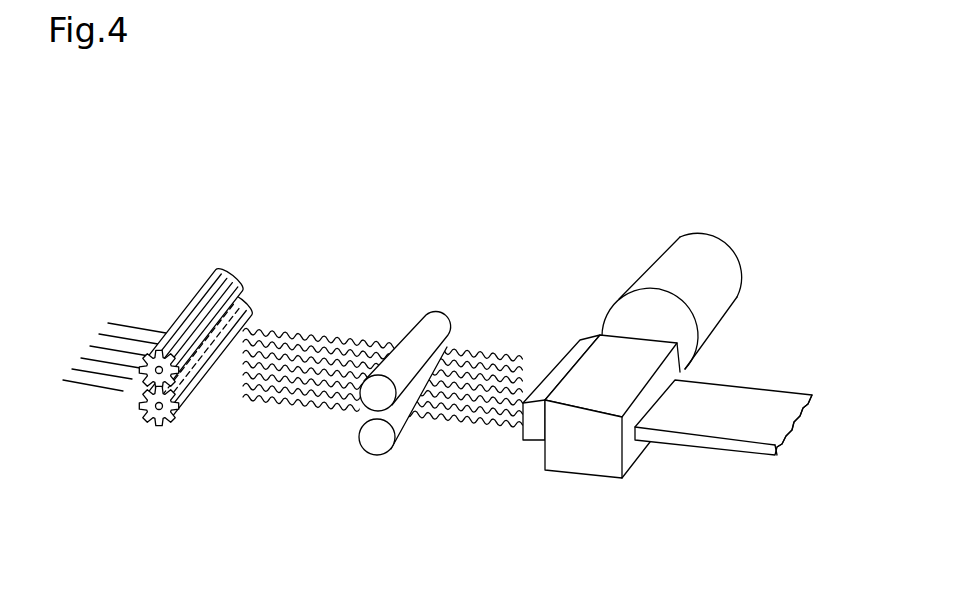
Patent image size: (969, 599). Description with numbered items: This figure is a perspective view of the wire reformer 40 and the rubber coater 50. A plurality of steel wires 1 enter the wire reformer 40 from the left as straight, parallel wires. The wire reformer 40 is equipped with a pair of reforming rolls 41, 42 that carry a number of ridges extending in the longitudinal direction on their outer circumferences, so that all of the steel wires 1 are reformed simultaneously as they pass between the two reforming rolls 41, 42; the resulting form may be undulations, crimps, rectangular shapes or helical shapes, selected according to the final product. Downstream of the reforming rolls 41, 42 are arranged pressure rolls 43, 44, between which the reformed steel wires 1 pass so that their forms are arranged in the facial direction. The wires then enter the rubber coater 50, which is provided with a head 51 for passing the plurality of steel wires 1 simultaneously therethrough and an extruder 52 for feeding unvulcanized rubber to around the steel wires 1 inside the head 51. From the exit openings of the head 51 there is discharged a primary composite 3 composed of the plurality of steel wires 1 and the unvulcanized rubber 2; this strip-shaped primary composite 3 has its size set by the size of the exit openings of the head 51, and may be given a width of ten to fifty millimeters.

The steel wires 1 is at (105, 385).
The unvulcanized rubber 2 is at (713, 392).
The primary composite 3 is at (786, 384).
The wire reformer 40 is at (236, 345).
The reforming roll 41 is at (203, 282).
The reforming roll 42 is at (185, 412).
The pressure roll 43 is at (423, 323).
The pressure roll 44 is at (383, 447).
The rubber coater 50 is at (679, 373).
The head 51 is at (600, 467).
The extruder 52 is at (722, 280).